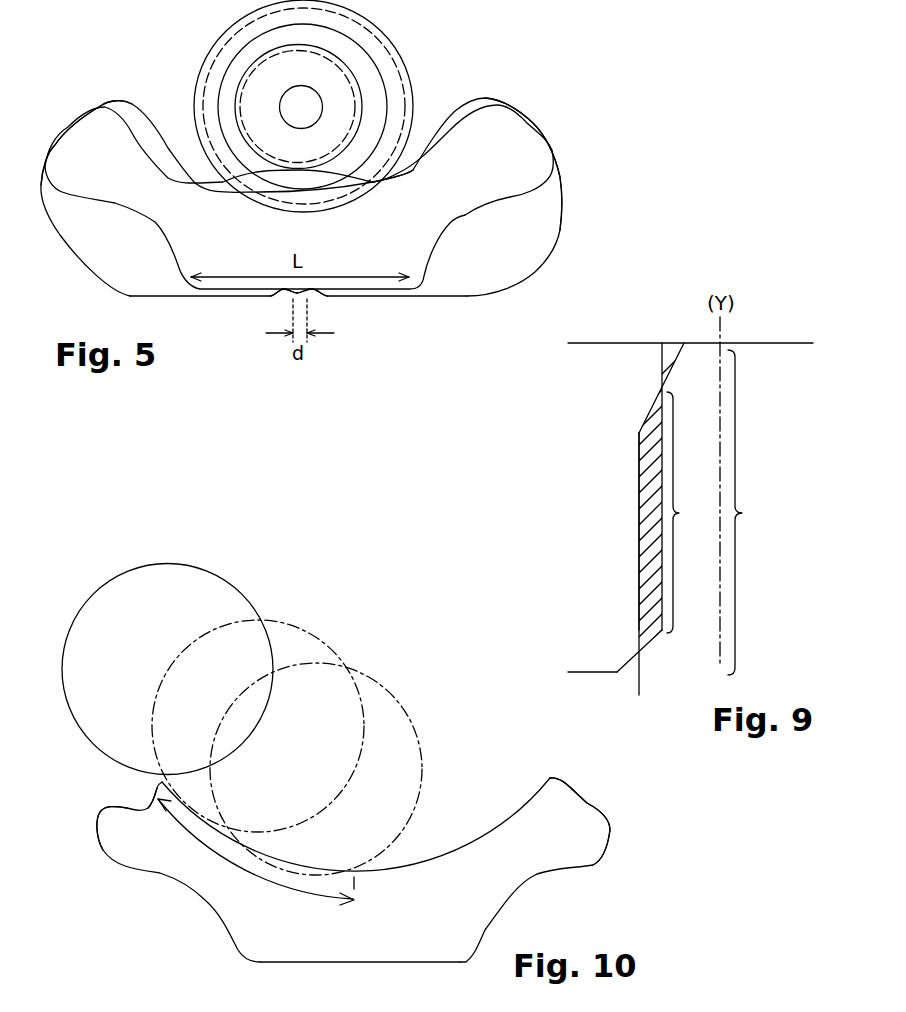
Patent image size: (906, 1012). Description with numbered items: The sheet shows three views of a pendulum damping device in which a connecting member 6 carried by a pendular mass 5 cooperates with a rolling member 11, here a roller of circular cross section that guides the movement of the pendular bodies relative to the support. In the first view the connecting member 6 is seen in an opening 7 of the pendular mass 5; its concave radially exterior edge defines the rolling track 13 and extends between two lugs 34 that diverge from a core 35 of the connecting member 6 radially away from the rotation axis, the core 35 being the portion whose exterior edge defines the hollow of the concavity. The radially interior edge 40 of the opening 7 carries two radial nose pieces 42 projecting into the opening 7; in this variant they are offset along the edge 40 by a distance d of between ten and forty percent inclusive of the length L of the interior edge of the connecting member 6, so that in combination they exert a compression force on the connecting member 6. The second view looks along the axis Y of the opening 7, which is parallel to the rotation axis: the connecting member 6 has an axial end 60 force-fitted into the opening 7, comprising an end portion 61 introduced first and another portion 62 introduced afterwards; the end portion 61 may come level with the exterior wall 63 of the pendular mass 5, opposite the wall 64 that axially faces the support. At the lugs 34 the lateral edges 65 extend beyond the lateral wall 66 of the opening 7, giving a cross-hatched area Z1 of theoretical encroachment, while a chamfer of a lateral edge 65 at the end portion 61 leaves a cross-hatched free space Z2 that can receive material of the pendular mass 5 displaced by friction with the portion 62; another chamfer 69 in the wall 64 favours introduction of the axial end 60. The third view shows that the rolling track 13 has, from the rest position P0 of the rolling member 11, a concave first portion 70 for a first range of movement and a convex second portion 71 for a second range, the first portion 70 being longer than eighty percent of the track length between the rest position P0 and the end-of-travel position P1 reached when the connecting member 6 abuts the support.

In FIG. 9, the pendular mass 5 is at (583, 442).
In FIG. 10, the connecting member 6 is at (447, 928).
In FIG. 5, the opening 7 is at (487, 257).
In FIG. 5, the rolling member 11 is at (373, 90).
In FIG. 10, the rolling member 11 is at (207, 568).
In FIG. 5, the rolling track 13 is at (415, 176).
In FIG. 5, the lug 34 is at (98, 146).
In FIG. 10, the lug 34 is at (135, 831).
In FIG. 10, the core 35 is at (353, 942).
In FIG. 5, the radially interior edge 40 is at (433, 297).
In FIG. 5, the radial nose piece 42 is at (282, 294).
In FIG. 9, the axial end 60 is at (746, 496).
In FIG. 9, the end portion 61 is at (685, 372).
In FIG. 9, the portion 62 is at (688, 512).
In FIG. 9, the exterior wall 63 is at (622, 344).
In FIG. 9, the wall 64 is at (587, 673).
In FIG. 9, the lateral edge 65 is at (638, 510).
In FIG. 9, the lateral wall 66 is at (660, 544).
In FIG. 9, the chamfer 69 is at (630, 665).
In FIG. 10, the first portion 70 is at (227, 865).
In FIG. 10, the second portion 71 is at (150, 797).
In FIG. 10, the rest position P0 is at (363, 879).
In FIG. 10, the end-of-travel position P1 is at (157, 784).
In FIG. 9, the area of theoretical encroachment Z1 is at (646, 627).
In FIG. 9, the free space Z2 is at (673, 343).